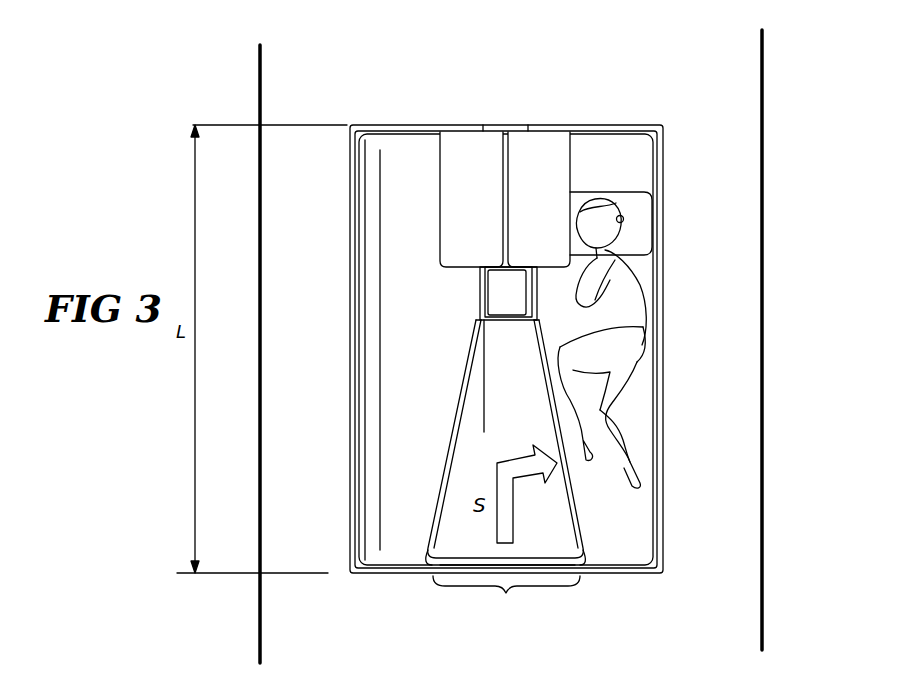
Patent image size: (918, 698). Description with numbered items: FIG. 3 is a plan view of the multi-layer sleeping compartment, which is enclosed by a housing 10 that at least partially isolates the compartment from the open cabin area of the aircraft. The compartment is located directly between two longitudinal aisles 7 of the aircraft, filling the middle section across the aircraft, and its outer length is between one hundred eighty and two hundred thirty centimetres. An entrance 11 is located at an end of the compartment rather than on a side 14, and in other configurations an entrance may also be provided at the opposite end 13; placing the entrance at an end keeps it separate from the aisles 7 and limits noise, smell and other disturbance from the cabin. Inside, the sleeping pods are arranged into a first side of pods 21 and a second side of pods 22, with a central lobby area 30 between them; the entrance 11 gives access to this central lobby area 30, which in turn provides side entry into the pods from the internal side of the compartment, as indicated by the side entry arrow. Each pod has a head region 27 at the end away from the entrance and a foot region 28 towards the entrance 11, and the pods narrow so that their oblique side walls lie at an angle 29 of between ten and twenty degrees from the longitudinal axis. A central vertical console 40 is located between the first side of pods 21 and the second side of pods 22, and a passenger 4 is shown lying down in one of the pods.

The passenger 4 is at (632, 289).
The longitudinal aisle 7 is at (287, 562).
The housing 10 is at (662, 500).
The entrance 11 is at (506, 600).
The end of the sleeping compartment 13 is at (505, 118).
The side of the sleeping compartment 14 is at (693, 133).
The first side of pods 21 is at (367, 377).
The second side of pods 22 is at (652, 343).
The head region 27 is at (397, 150).
The foot region 28 is at (393, 552).
The angle 29 is at (477, 415).
The central lobby area 30 is at (558, 530).
The central vertical console 40 is at (505, 285).